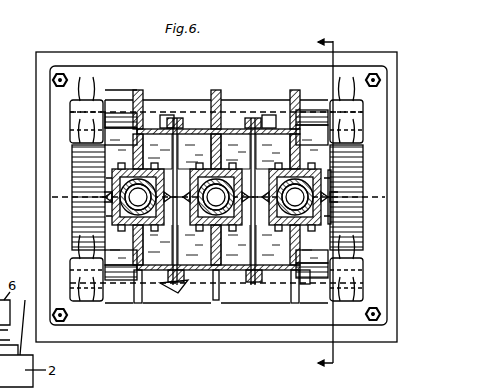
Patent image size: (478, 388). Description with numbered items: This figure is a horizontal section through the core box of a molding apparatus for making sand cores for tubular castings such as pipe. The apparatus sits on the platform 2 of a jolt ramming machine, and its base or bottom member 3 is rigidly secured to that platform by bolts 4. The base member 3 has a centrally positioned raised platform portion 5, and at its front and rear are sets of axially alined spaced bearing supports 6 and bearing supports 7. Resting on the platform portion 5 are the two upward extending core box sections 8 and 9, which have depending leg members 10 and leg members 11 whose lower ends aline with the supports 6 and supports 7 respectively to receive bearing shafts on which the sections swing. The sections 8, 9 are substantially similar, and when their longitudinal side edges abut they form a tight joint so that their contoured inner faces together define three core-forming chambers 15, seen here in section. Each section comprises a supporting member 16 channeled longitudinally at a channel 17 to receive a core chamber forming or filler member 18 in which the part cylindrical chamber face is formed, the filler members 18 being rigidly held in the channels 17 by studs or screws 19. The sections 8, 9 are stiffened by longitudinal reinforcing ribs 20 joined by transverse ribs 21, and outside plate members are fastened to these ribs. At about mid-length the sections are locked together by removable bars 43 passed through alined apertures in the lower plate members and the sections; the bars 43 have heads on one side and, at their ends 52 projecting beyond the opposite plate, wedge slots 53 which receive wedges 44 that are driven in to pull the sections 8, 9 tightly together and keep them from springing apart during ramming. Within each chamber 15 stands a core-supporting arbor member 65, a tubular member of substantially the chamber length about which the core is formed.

The platform 2 is at (115, 52).
The base or bottom member 3 is at (75, 72).
The bolts 4 is at (52, 80).
The raised platform portion 5 is at (357, 182).
The bearing supports 6 is at (72, 263).
The bearing supports 7 is at (72, 107).
The core box section 8 is at (78, 152).
The core box section 9 is at (80, 234).
The depending leg members 10 is at (300, 284).
The depending leg members 11 is at (110, 126).
The core-forming chamber 15 is at (107, 182).
The supporting member 16 is at (110, 173).
The channel 17 is at (140, 108).
The core chamber forming or filler member 18 is at (110, 208).
The studs or screws 19 is at (78, 164).
The longitudinal reinforcing ribs 20 is at (303, 101).
The transverse ribs 21 is at (204, 128).
The bars 43 is at (260, 127).
The wedges 44 is at (179, 292).
The ends of bars 52 is at (167, 126).
The wedge slots 53 is at (178, 293).
The core-supporting arbor member 65 is at (322, 218).